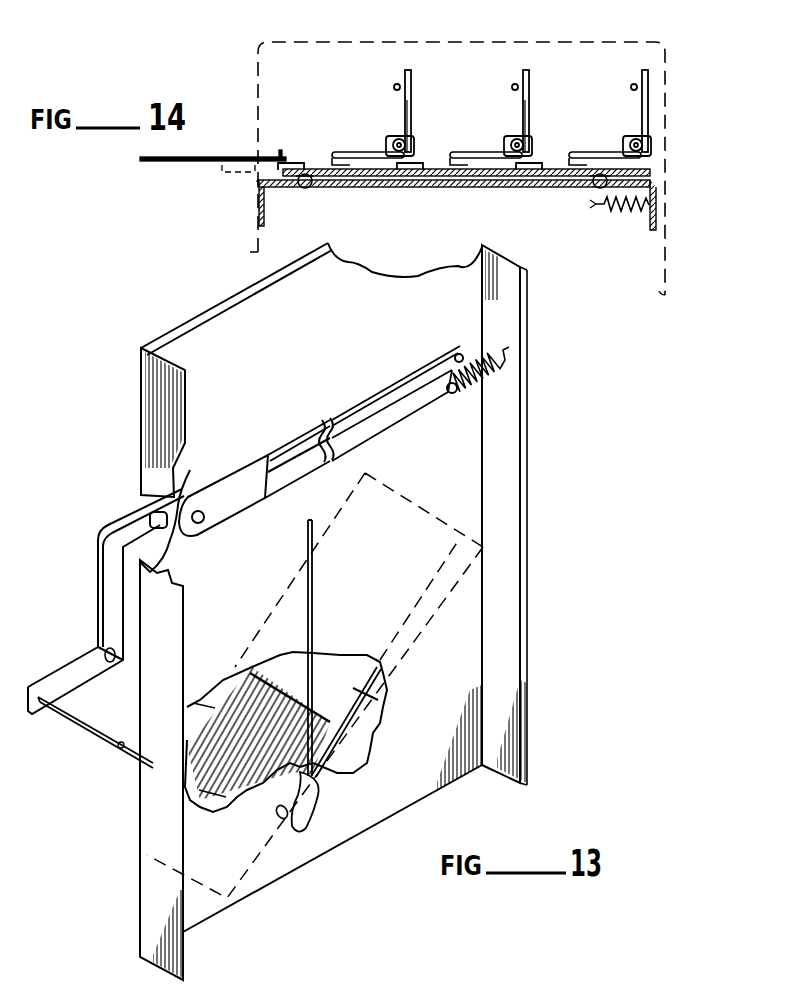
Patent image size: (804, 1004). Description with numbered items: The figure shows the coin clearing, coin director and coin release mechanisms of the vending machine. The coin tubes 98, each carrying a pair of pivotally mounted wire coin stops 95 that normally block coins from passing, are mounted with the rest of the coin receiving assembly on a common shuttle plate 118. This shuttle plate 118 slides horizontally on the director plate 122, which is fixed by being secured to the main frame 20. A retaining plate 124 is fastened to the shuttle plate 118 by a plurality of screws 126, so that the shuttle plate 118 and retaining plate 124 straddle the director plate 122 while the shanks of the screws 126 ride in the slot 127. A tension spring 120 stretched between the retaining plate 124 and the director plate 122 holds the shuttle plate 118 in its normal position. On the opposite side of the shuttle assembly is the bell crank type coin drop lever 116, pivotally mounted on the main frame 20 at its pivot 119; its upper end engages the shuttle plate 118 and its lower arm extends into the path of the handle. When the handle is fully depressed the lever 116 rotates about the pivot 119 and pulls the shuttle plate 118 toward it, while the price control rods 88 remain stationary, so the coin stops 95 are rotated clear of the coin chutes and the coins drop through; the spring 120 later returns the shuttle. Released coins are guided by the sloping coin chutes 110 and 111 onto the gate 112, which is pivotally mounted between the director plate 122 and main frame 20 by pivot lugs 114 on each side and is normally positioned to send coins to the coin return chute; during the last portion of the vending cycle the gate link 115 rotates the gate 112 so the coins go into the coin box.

In FIG. 14, the main frame 20 is at (252, 70).
In FIG. 14, the price control rod 88 is at (396, 85).
In FIG. 14, the coin stop 95 is at (521, 108).
In FIG. 14, the coin tube 98 is at (300, 163).
In FIG. 14, the shuttle plate 118 is at (432, 166).
In FIG. 14, the coin drop lever 116 is at (215, 163).
In FIG. 13, the coin drop lever 116 is at (68, 677).
In FIG. 14, the director plate 122 is at (257, 212).
In FIG. 13, the director plate 122 is at (330, 349).
In FIG. 14, the retaining plate 124 is at (390, 188).
In FIG. 13, the retaining plate 124 is at (400, 404).
In FIG. 14, the screw 126 is at (312, 190).
In FIG. 13, the screw 126 is at (201, 510).
In FIG. 14, the tension spring 120 is at (622, 212).
In FIG. 13, the tension spring 120 is at (498, 378).
In FIG. 13, the slot 127 is at (290, 462).
In FIG. 13, the pivot 119 is at (112, 663).
In FIG. 13, the coin chute 111 is at (125, 748).
In FIG. 13, the pivot lug 114 is at (205, 700).
In FIG. 13, the gate link 115 is at (313, 620).
In FIG. 13, the coin chute 110 is at (350, 668).
In FIG. 13, the gate 112 is at (262, 760).